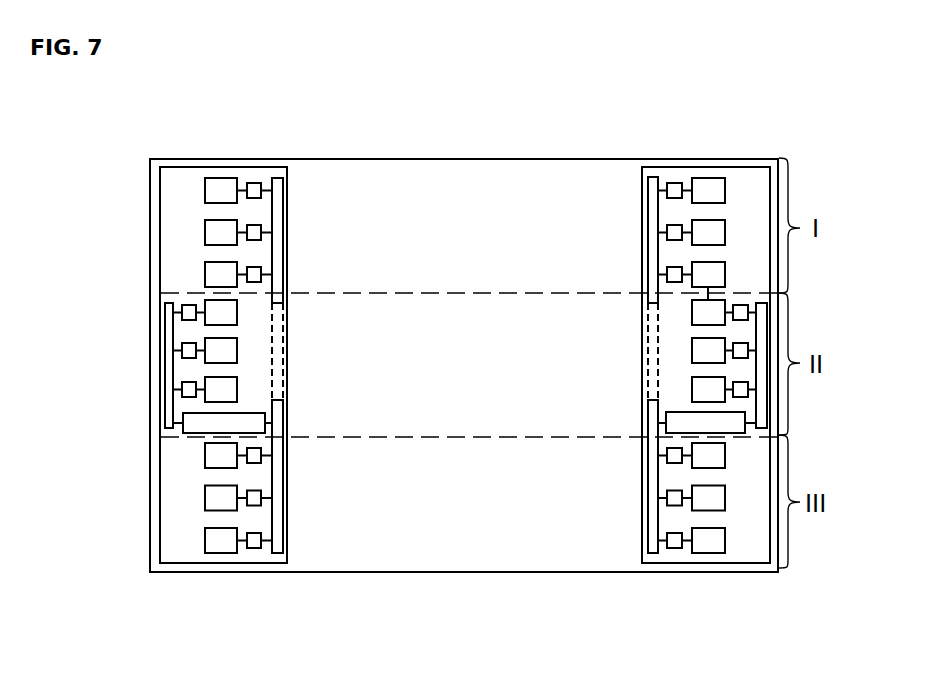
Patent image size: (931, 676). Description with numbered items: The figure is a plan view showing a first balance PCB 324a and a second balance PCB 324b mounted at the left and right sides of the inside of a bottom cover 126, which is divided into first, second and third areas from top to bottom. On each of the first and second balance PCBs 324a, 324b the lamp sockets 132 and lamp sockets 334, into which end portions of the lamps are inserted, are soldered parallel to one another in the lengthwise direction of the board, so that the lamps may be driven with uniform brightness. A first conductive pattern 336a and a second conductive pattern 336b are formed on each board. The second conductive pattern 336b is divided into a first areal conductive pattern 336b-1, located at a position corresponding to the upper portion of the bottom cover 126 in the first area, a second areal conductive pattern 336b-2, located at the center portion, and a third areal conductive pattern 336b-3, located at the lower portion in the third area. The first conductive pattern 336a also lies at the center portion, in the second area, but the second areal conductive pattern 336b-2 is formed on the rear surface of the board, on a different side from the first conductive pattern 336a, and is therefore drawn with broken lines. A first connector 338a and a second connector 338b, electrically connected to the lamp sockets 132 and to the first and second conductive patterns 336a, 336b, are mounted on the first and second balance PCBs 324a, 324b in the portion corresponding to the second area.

The bottom cover 126 is at (497, 165).
The lamp socket 132 is at (212, 188).
The lamp socket 334 is at (251, 183).
The first balance PCB 324a is at (237, 565).
The second balance PCB 324b is at (710, 167).
The first conductive pattern 336a is at (167, 362).
The second conductive pattern 336b is at (419, 365).
The first areal conductive pattern 336b-1 is at (283, 230).
The second areal conductive pattern 336b-2 is at (283, 349).
The third areal conductive pattern 336b-3 is at (359, 476).
The first connector 338a is at (195, 425).
The second connector 338b is at (734, 427).